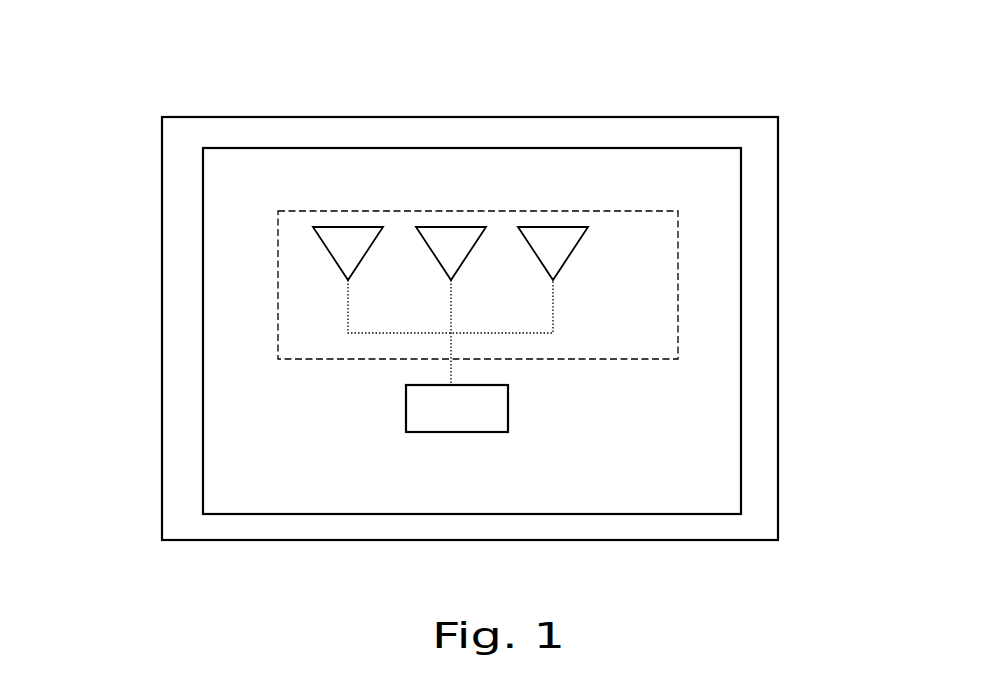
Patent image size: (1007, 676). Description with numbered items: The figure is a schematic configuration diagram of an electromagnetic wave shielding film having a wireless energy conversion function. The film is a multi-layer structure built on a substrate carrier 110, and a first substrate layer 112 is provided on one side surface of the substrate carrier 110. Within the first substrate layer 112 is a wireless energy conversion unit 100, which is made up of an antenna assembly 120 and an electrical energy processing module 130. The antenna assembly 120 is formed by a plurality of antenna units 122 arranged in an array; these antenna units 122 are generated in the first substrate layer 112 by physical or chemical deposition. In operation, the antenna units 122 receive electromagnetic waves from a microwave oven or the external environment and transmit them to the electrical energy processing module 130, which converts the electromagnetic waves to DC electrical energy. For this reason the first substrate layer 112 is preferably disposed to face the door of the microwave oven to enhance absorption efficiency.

The wireless energy conversion unit 100 is at (911, 10).
The substrate carrier 110 is at (617, 137).
The first substrate layer 112 is at (247, 178).
The antenna assembly 120 is at (682, 255).
The antenna unit 122 is at (552, 253).
The electrical energy processing module 130 is at (406, 400).